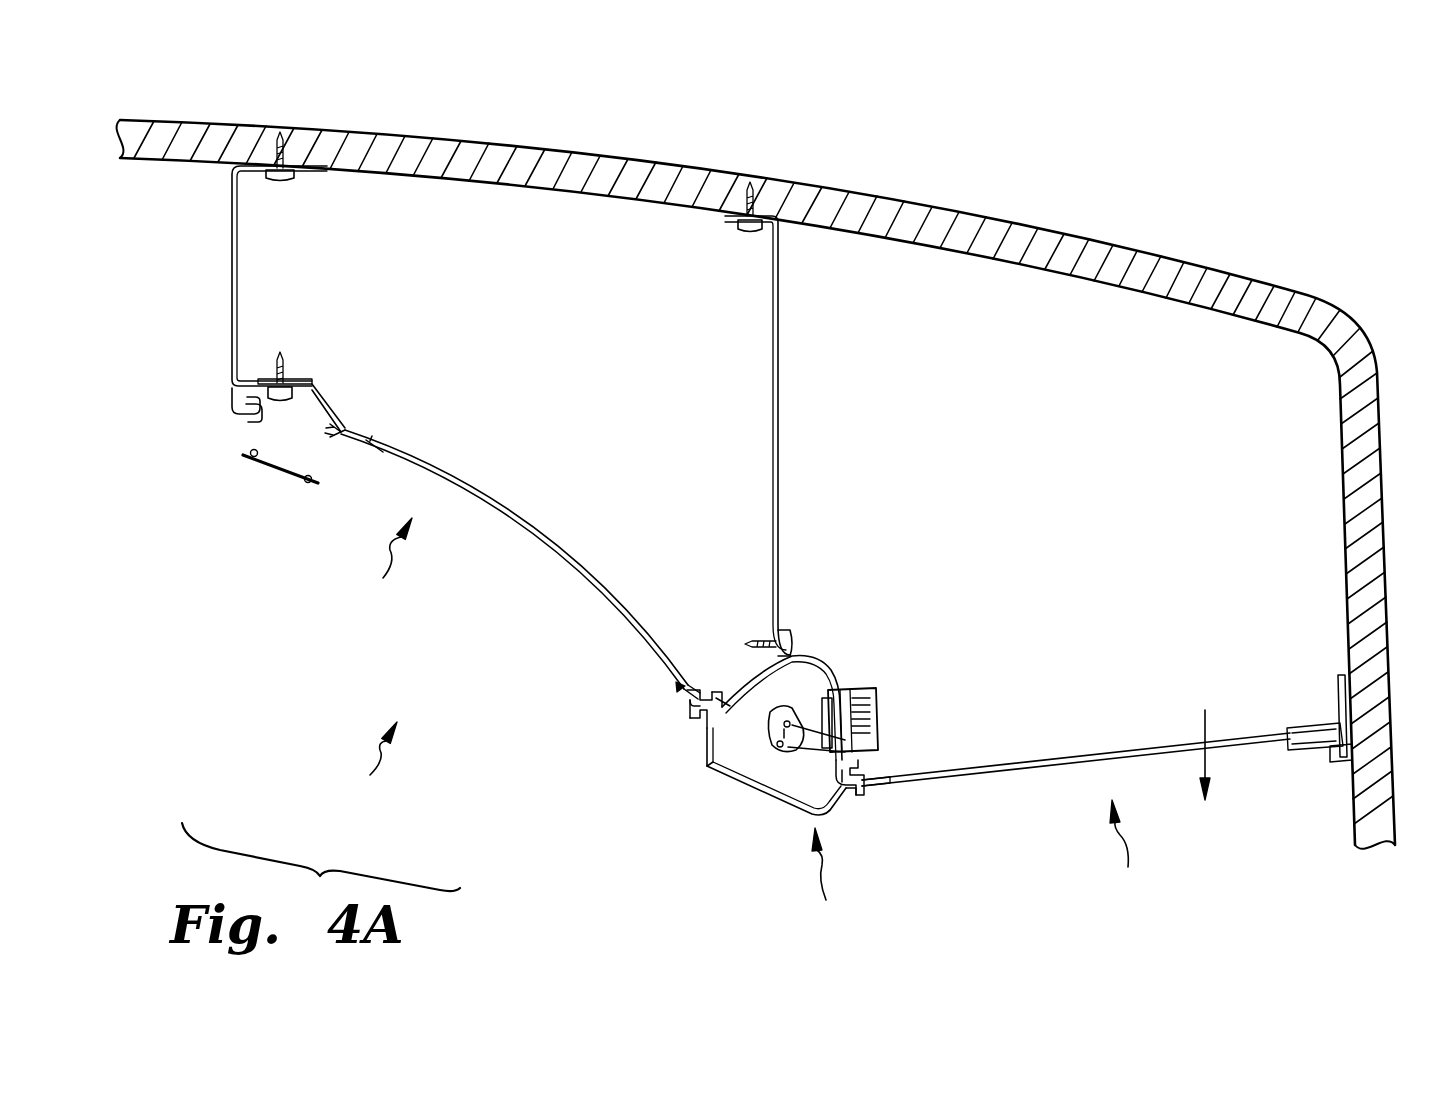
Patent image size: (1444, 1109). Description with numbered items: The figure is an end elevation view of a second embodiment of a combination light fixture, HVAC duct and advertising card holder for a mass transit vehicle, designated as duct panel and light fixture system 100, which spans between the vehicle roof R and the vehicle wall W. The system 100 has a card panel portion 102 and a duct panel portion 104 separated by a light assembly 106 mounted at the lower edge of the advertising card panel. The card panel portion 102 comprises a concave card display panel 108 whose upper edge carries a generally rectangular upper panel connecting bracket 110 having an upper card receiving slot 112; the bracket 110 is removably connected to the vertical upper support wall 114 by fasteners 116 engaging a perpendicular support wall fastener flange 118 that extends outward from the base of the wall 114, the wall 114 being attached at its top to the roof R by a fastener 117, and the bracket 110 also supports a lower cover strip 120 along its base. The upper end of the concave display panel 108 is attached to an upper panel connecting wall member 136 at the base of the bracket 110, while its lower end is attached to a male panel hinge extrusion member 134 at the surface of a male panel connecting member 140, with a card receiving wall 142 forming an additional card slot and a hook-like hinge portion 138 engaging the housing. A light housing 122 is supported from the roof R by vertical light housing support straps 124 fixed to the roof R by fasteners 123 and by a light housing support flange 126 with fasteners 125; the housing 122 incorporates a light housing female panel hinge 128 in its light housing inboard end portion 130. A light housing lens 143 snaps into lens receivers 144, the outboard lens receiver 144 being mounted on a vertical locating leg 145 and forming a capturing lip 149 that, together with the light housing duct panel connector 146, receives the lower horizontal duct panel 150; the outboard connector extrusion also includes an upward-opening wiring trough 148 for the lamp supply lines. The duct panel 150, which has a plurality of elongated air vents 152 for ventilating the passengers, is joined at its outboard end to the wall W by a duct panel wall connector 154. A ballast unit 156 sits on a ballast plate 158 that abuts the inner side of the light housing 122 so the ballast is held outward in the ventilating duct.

The roof R is at (525, 158).
The wall W is at (1364, 490).
The duct panel and light fixture system 100 is at (749, 499).
The card panel portion 102 is at (417, 364).
The duct panel portion 104 is at (1107, 756).
The light assembly 106 is at (782, 532).
The concave card display panel 108 is at (534, 527).
The upper panel connecting bracket 110 is at (322, 396).
The upper card receiving slot 112 is at (240, 420).
The vertical upper support wall 114 is at (235, 250).
The fasteners 116 is at (281, 362).
The roof fastener 117 is at (292, 150).
The support wall fastener flange 118 is at (250, 382).
The lower cover strip 120 is at (268, 463).
The light housing 122 is at (741, 655).
The fasteners 123 is at (762, 198).
The vertical light housing support straps 124 is at (780, 466).
The fasteners 125 is at (758, 638).
The light housing support flange 126 is at (791, 655).
The light housing female panel hinge 128 is at (688, 730).
The light housing inboard end portion 130 is at (685, 716).
The male panel hinge extrusion member 134 is at (733, 703).
The upper panel connecting wall member 136 is at (374, 424).
The channel 138 is at (707, 687).
The male panel connecting member 140 is at (670, 660).
The card receiving wall 142 is at (683, 688).
The light housing lens 143 is at (770, 798).
The lens receivers 144 is at (713, 768).
The vertical locating leg 145 is at (854, 780).
The light housing duct panel connector 146 is at (890, 780).
The wiring trough 148 is at (866, 760).
The capturing lip 149 is at (850, 790).
The lower horizontal duct panel 150 is at (1063, 750).
The elongated air vents 152 is at (1220, 733).
The duct panel wall connector 154 is at (1330, 723).
The ballast unit 156 is at (860, 684).
The ballast plate 158 is at (813, 677).